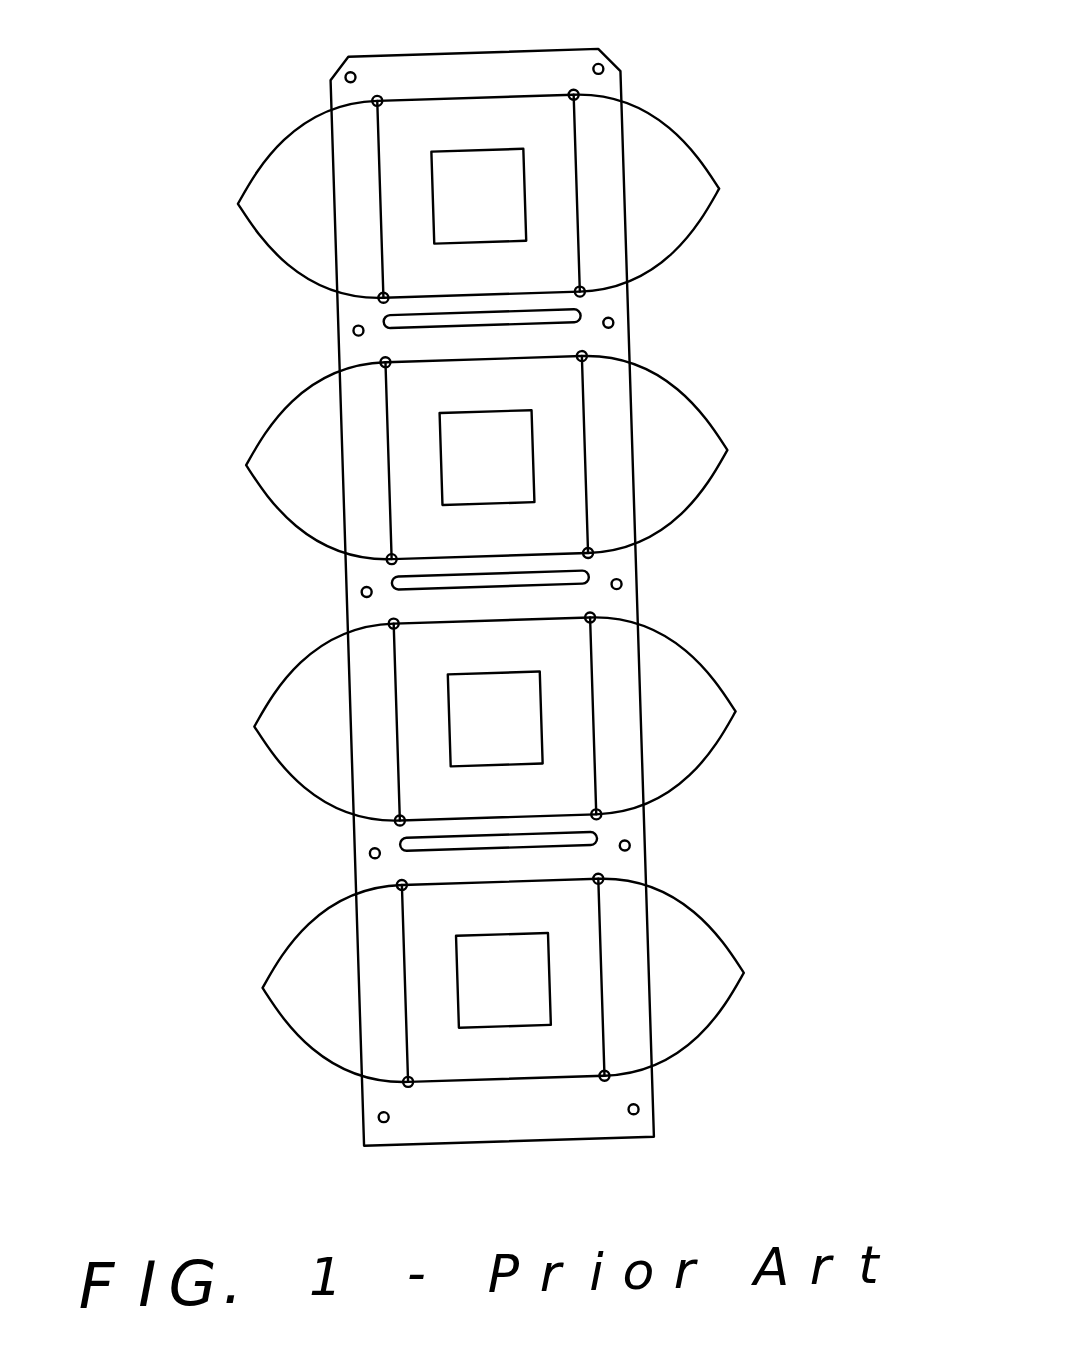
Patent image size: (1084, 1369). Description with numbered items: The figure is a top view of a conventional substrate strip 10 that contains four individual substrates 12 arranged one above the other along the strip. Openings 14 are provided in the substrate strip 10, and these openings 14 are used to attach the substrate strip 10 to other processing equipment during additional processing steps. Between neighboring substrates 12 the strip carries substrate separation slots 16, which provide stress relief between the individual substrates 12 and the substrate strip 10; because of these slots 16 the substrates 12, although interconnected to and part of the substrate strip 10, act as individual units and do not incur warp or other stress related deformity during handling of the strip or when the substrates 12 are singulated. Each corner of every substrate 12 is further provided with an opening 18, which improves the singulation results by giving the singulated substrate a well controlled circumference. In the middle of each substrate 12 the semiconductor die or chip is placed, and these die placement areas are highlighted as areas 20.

The substrate strip 10 is at (218, 562).
The individual substrate 12 is at (558, 208).
The opening 14 is at (345, 78).
The substrate separation slot 16 is at (387, 324).
The opening 18 is at (489, 588).
The die placement area 20 is at (412, 212).